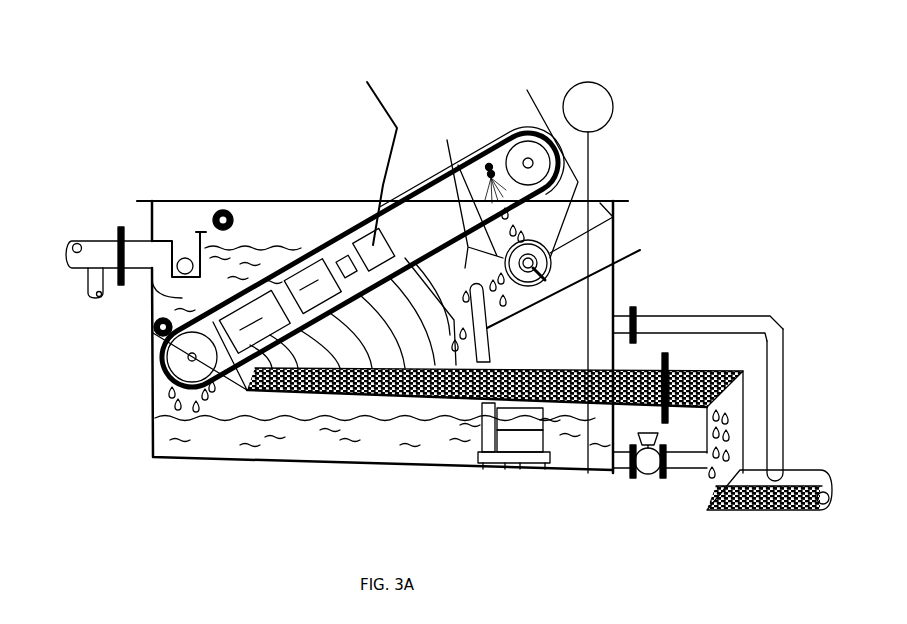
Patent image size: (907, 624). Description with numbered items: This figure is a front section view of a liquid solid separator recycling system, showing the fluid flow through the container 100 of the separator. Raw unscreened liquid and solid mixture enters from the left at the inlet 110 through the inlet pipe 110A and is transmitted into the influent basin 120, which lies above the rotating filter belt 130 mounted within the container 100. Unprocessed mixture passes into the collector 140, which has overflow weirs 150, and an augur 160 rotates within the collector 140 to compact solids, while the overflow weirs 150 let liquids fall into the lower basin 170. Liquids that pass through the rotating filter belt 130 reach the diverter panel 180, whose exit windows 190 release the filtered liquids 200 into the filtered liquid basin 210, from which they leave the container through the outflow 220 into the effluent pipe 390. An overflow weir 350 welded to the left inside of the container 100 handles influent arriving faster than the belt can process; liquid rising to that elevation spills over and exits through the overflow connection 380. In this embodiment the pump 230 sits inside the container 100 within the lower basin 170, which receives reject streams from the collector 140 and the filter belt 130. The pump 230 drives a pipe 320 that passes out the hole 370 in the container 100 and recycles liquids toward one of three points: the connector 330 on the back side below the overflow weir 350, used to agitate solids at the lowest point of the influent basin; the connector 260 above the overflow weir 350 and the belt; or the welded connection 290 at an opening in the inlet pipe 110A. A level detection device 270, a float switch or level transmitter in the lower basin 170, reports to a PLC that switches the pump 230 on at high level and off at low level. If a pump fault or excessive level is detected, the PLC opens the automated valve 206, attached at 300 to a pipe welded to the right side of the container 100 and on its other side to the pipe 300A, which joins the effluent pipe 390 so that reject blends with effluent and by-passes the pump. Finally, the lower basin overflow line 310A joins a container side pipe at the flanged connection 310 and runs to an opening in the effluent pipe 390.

The container 100 is at (340, 200).
The inlet 110 is at (118, 233).
The inlet pipe 110A is at (90, 240).
The influent basin 120 is at (265, 250).
The rotating filter belt 130 is at (487, 162).
The collector 140 is at (600, 203).
The overflow weirs 150 is at (447, 140).
The augur 160 is at (528, 91).
The lower basin 170 is at (300, 463).
The diverter panel 180 is at (343, 258).
The exit windows 190 is at (368, 84).
The filtered liquids 200 is at (380, 372).
The automated valve 206 is at (648, 474).
The filtered liquid basin 210 is at (437, 400).
The outflow 220 is at (670, 368).
The pump 230 is at (515, 468).
The connector 260 is at (222, 210).
The level detection device 270 is at (606, 92).
The welded connection 290 is at (85, 272).
The valve attachment point 300 is at (636, 480).
The pipe 300A is at (685, 470).
The flanged connection 310 is at (636, 318).
The lower basin overflow line 310A is at (778, 396).
The pipe 320 is at (641, 250).
The connector 330 is at (159, 335).
The overflow weir 350 is at (200, 232).
The hole 370 is at (471, 284).
The overflow connection 380 is at (183, 256).
The effluent pipe 390 is at (760, 508).